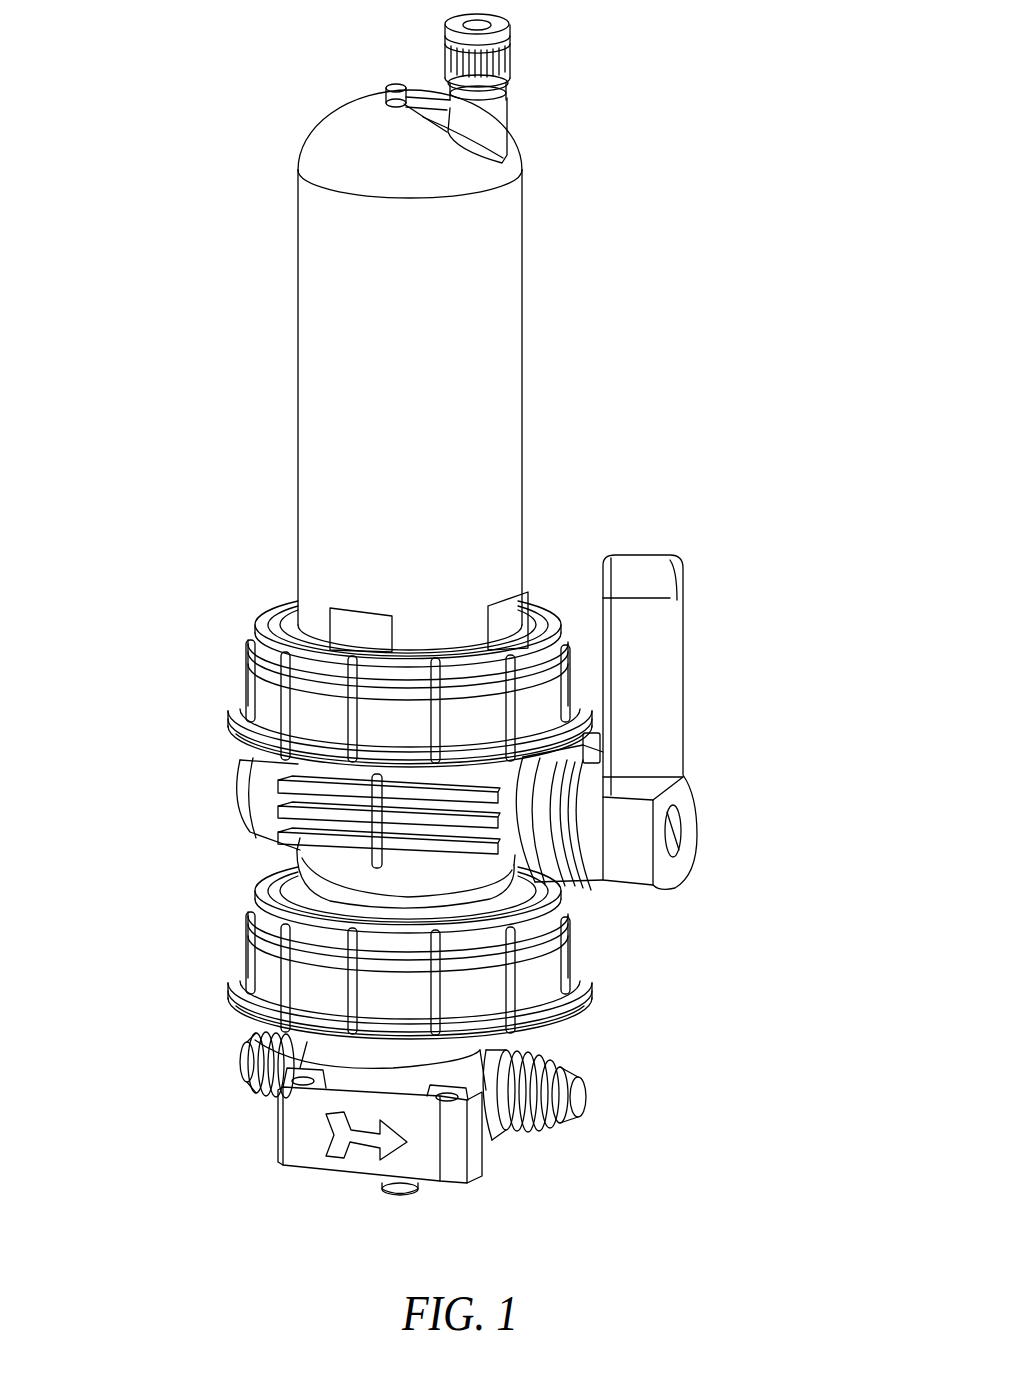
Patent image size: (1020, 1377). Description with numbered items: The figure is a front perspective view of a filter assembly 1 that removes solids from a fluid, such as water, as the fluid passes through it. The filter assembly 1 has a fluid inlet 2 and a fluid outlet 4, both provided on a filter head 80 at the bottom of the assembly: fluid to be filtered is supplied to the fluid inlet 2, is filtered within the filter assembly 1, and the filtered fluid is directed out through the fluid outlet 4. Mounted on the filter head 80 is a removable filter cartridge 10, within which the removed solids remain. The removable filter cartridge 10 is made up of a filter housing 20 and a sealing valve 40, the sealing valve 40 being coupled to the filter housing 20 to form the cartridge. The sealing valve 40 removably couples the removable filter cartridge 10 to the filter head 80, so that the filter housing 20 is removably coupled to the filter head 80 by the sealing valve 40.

The filter assembly 1 is at (122, 107).
The removable filter cartridge 10 is at (714, 537).
The filter housing 20 is at (297, 374).
The sealing valve 40 is at (224, 799).
The fluid inlet 2 is at (242, 1058).
The fluid outlet 4 is at (586, 1097).
The filter head 80 is at (274, 1122).